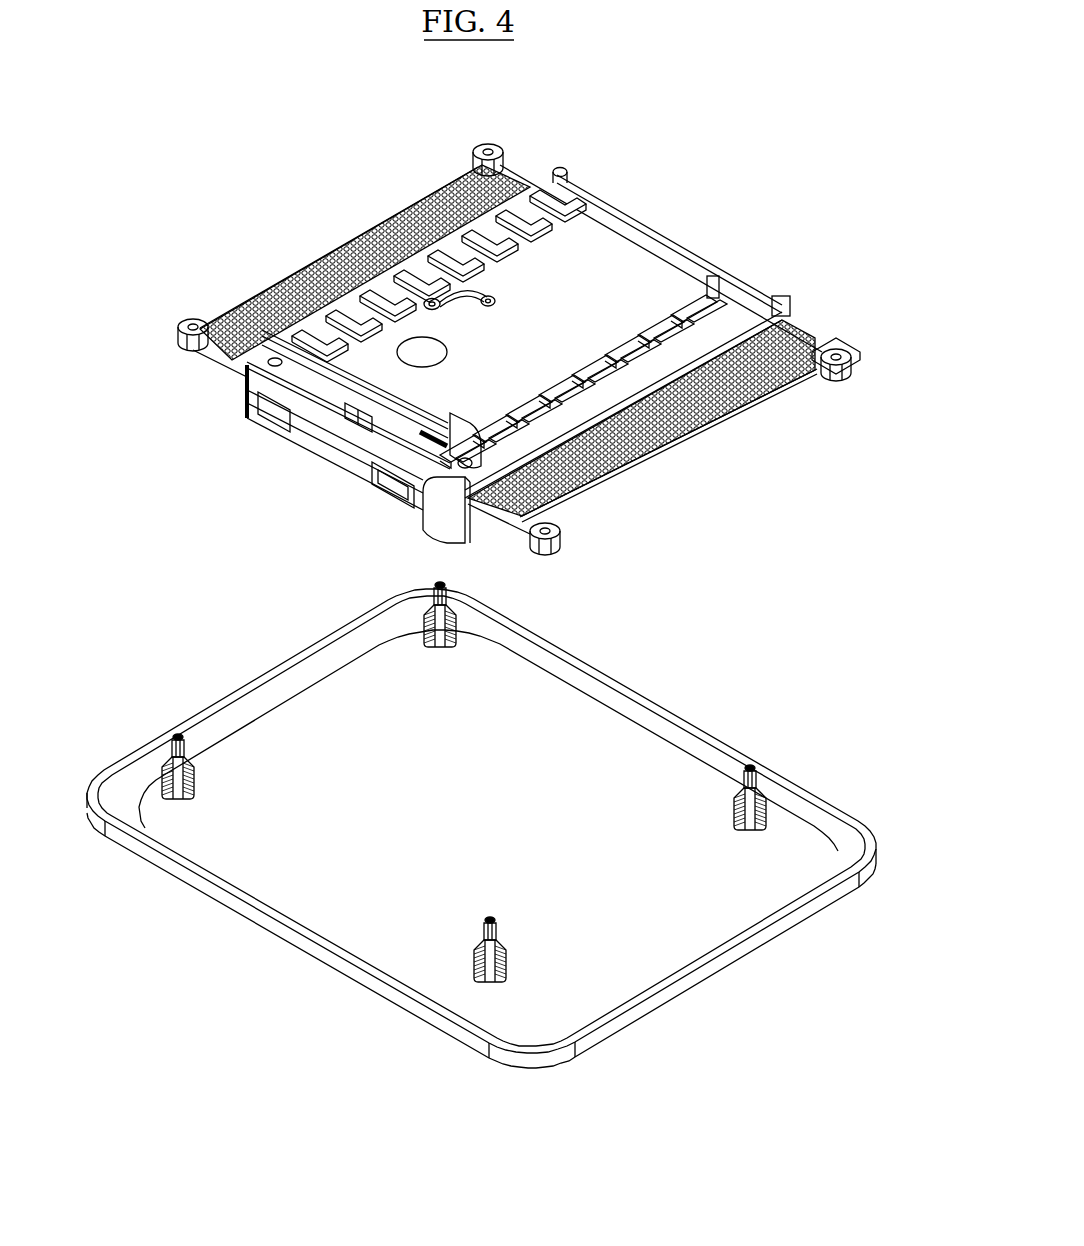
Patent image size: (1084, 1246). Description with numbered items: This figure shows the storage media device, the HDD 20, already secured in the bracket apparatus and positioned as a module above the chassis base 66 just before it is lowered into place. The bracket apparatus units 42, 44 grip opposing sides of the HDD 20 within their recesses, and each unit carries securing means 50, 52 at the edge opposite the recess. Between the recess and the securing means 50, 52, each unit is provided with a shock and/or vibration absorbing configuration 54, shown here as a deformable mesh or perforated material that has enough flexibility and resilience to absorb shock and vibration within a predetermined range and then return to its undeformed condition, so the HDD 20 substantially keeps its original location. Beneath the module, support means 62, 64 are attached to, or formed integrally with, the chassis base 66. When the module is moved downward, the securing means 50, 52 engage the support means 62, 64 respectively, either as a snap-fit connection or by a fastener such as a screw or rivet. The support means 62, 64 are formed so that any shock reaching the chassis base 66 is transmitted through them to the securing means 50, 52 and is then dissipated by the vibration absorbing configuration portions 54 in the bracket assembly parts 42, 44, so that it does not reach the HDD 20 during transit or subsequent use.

The HDD 20 is at (612, 258).
The side lug 42 is at (462, 188).
The side lug 44 is at (658, 325).
The securing means 50 is at (492, 141).
The securing means 52 is at (853, 362).
The shock and/or vibration absorbing configuration 54 is at (352, 268).
The support means 62 is at (447, 588).
The support means 64 is at (755, 770).
The chassis base 66 is at (597, 752).